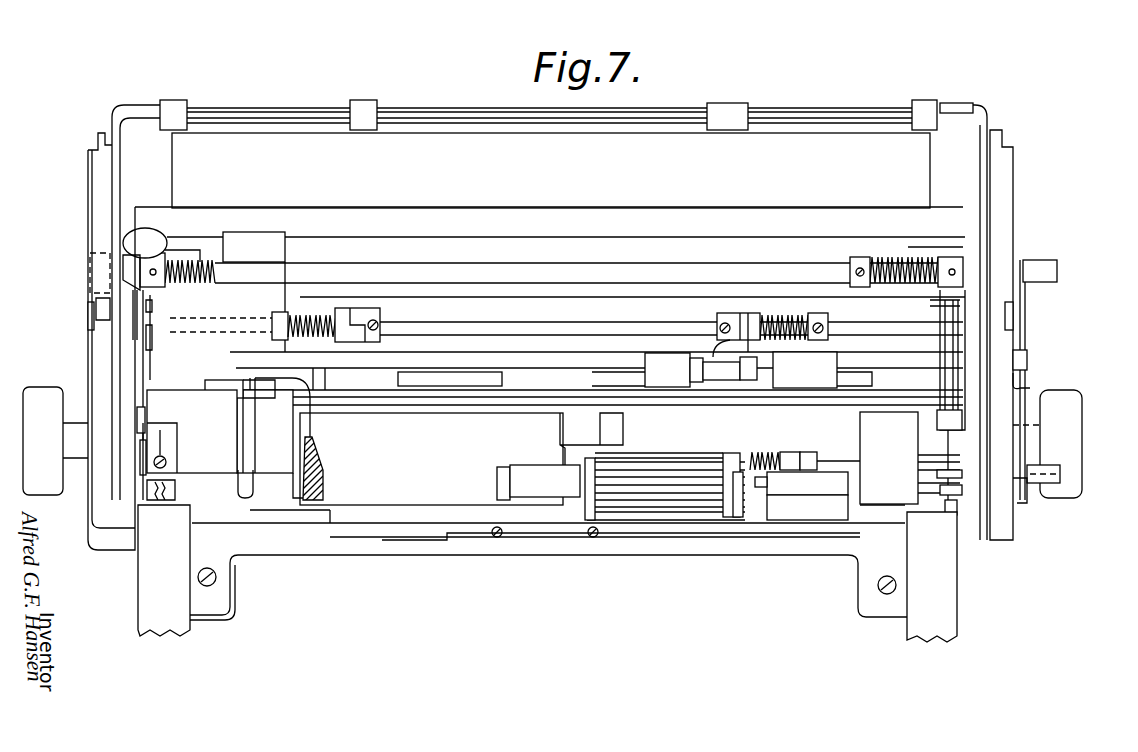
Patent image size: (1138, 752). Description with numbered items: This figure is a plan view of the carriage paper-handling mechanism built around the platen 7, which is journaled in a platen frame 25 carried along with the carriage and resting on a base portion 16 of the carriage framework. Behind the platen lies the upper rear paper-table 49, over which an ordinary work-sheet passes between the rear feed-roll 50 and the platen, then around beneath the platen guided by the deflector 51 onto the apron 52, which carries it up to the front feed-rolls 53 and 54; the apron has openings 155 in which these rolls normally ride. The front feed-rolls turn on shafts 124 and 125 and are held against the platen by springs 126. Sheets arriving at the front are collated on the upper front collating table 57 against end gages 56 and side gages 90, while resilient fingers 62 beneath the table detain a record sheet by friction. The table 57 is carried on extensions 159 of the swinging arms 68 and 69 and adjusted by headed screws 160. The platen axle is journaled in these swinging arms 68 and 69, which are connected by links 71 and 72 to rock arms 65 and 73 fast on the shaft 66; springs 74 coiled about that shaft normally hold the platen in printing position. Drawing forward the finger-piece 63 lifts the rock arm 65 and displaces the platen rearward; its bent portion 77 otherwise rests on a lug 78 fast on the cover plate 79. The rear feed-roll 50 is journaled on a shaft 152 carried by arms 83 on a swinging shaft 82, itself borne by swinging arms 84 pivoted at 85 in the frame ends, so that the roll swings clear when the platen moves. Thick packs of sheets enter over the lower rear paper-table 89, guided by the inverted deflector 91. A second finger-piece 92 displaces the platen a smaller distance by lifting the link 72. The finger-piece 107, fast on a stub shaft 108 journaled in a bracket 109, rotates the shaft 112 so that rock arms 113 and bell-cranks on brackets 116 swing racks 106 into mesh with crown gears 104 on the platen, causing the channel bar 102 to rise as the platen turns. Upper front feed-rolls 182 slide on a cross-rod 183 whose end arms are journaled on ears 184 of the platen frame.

The platen 7 is at (312, 422).
The base plate 16 is at (588, 545).
The platen frame 25 is at (123, 566).
The upper rear paper-table 49 is at (254, 292).
The rear feed-roll 50 is at (805, 370).
The deflector 51 is at (599, 385).
The apron 52 is at (461, 459).
The front feed-roll 53 is at (801, 483).
The front feed-roll 54 is at (807, 507).
The end gage 56 is at (245, 400).
The upper front aligning or collating table 57 is at (300, 445).
The resilient fingers 62 is at (253, 490).
The finger-piece 63 is at (145, 243).
The rock arm 65 is at (175, 262).
The shaft 66 is at (388, 273).
The swinging arm 68 is at (140, 460).
The swinging arm 69 is at (960, 440).
The link 71 is at (152, 306).
The link 72 is at (958, 352).
The rock arm 73 is at (930, 310).
The springs 74 is at (201, 270).
The bent portion 77 is at (124, 272).
The lug 78 is at (133, 298).
The cover plate 79 is at (107, 335).
The swinging shaft 82 is at (596, 328).
The arms 83 is at (343, 342).
The swinging arms 84 is at (152, 337).
The pivot 85 is at (136, 420).
The lower rear paper-table 89 is at (551, 170).
The side gages 90 is at (244, 420).
The inverted table or deflector 91 is at (641, 214).
The finger-piece 92 is at (1062, 472).
The channel bar 102 is at (893, 508).
The crown gears 104 is at (160, 498).
The rack 106 is at (168, 508).
The finger-piece 107 is at (1048, 268).
The stub shaft 108 is at (1029, 362).
The bracket 109 is at (1025, 386).
The shaft 112 is at (659, 454).
The rock arm 113 is at (928, 455).
The bracket 116 is at (962, 480).
The shaft 124 is at (705, 485).
The shaft 125 is at (700, 507).
The springs 126 is at (768, 452).
The shaft 152 is at (701, 370).
The openings 155 is at (526, 468).
The extensions 159 is at (143, 463).
The headed screws 160 is at (168, 464).
The upper front feed-rolls 182 is at (728, 110).
The cross-rod 183 is at (812, 108).
The ears 184 is at (92, 320).